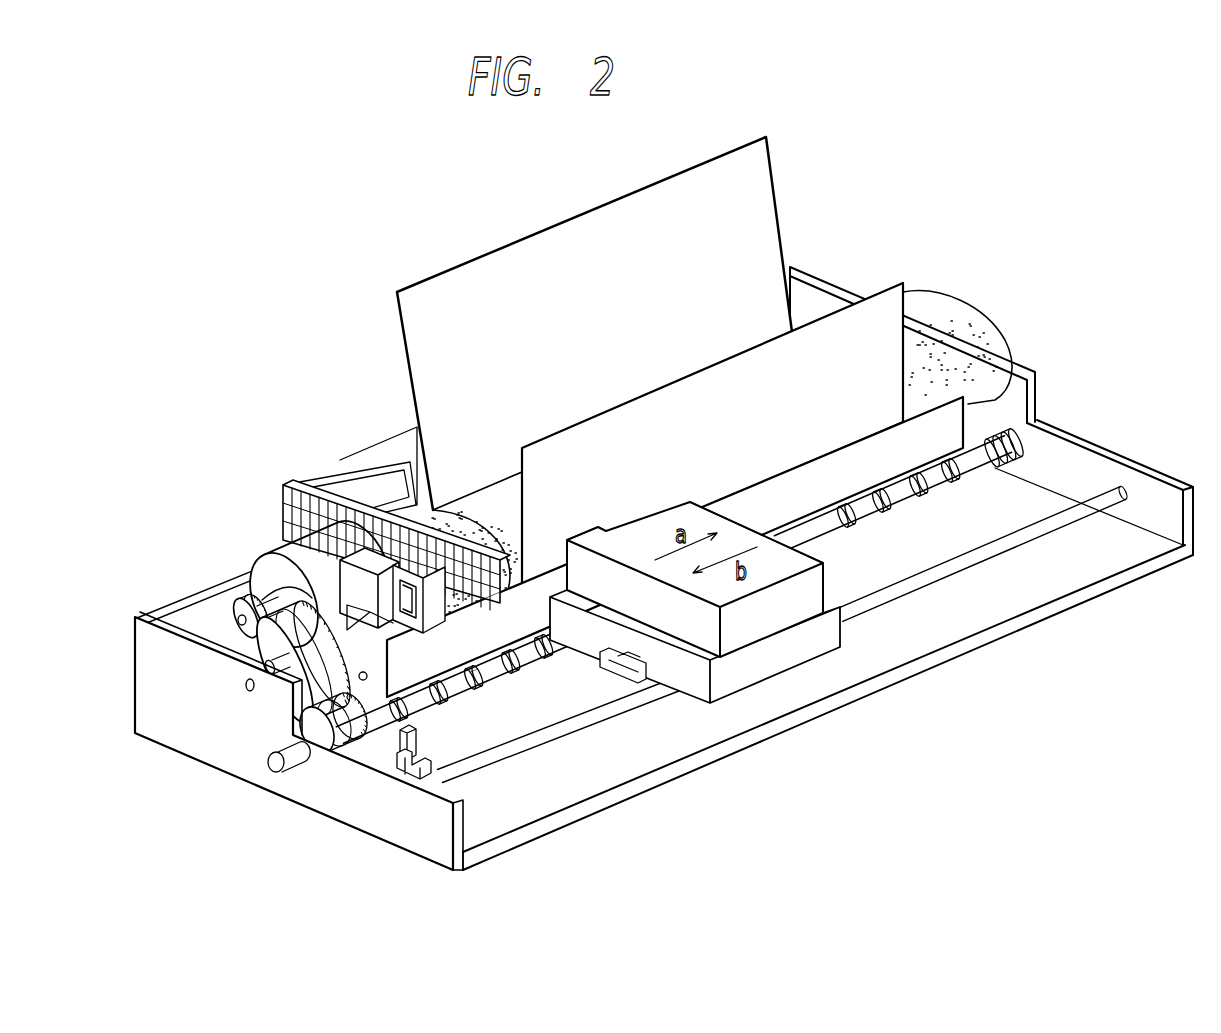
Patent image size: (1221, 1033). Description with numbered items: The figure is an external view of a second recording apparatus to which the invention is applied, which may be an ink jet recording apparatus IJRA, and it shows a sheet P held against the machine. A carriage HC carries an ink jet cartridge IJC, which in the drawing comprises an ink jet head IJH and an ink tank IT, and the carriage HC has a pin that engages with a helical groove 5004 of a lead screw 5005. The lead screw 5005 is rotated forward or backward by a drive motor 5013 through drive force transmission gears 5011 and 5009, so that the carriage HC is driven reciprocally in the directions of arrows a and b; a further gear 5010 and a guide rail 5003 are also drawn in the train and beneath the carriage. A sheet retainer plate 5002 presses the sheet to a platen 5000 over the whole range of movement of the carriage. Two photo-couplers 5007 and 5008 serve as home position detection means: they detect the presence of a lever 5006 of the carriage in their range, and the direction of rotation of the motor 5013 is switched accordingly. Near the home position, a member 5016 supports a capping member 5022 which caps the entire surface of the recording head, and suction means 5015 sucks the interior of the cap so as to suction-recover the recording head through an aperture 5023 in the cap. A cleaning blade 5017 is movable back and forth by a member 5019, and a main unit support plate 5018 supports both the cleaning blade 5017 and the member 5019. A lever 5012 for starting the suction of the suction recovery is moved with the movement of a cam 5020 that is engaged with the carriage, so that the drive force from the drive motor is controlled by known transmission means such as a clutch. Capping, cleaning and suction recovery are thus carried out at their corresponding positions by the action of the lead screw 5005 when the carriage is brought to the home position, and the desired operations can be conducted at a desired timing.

The recording paper P is at (768, 162).
The ink jet recording apparatus IJRA is at (852, 290).
The platen 5000 is at (923, 373).
The sheet retainer plate 5002 is at (833, 456).
The guide rail 5003 is at (643, 700).
The helical groove 5004 is at (480, 668).
The lead screw 5005 is at (537, 657).
The lever of the carriage 5006 is at (625, 670).
The photo-coupler 5007 is at (423, 742).
The photo-coupler 5008 is at (405, 780).
The drive force transmission gear 5009 is at (292, 752).
The driving force transmission gear 5010 is at (290, 700).
The drive force transmission gear 5011 is at (270, 650).
The lever for starting the suction 5012 is at (265, 557).
The drive motor 5013 is at (283, 537).
The suction means 5015 is at (363, 550).
The member for supporting the capping member 5016 is at (395, 556).
The cleaning blade 5017 is at (432, 572).
The main unit support plate 5018 is at (318, 478).
The member for moving the cleaning blade 5019 is at (280, 500).
The cam 5020 is at (352, 722).
The capping member 5022 is at (537, 540).
The aperture in the cap 5023 is at (485, 575).
The carriage HC is at (830, 633).
The ink jet cartridge IJC is at (818, 553).
The ink jet head IJH is at (593, 533).
The ink tank IT is at (733, 532).